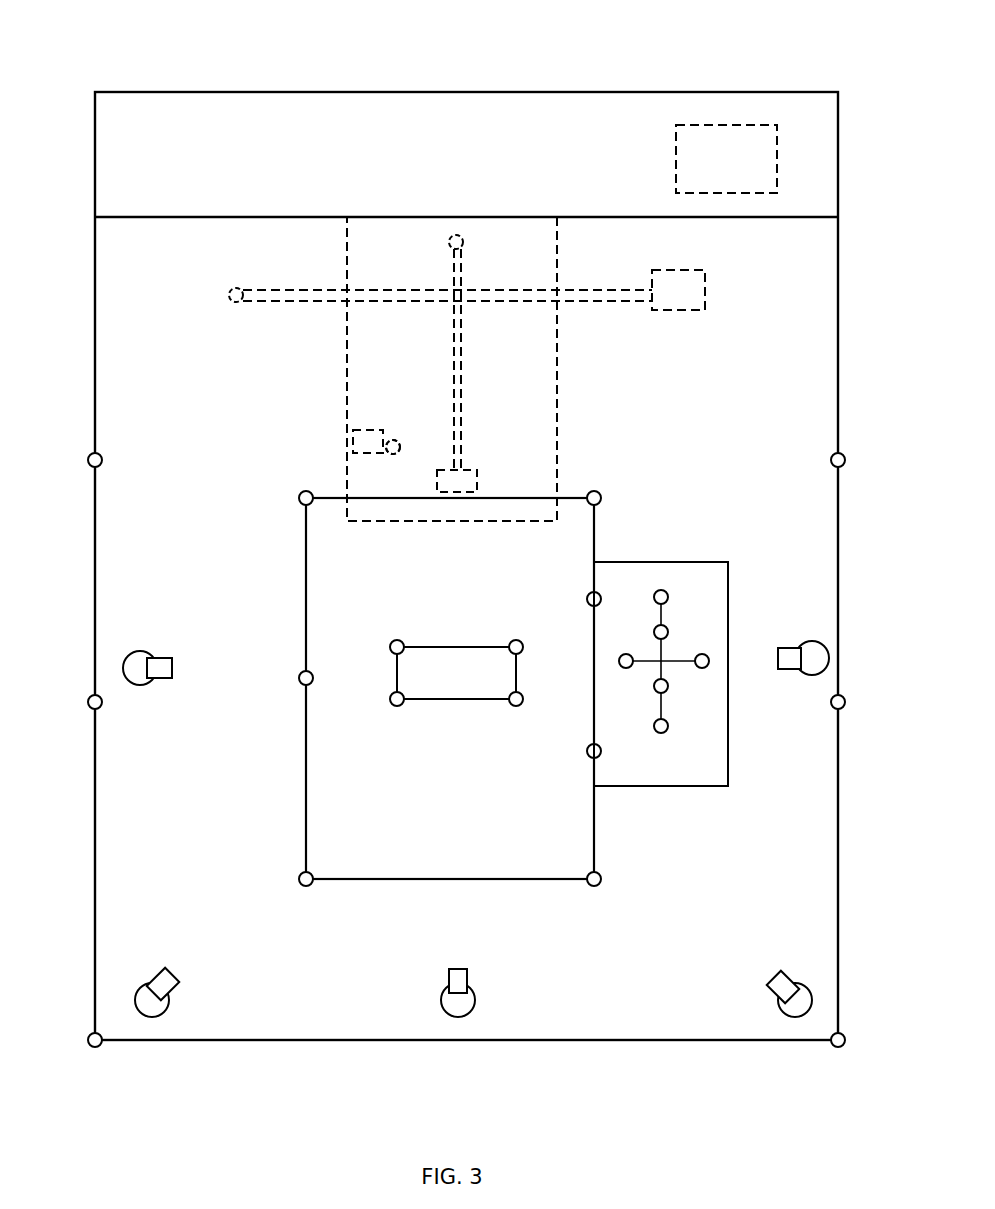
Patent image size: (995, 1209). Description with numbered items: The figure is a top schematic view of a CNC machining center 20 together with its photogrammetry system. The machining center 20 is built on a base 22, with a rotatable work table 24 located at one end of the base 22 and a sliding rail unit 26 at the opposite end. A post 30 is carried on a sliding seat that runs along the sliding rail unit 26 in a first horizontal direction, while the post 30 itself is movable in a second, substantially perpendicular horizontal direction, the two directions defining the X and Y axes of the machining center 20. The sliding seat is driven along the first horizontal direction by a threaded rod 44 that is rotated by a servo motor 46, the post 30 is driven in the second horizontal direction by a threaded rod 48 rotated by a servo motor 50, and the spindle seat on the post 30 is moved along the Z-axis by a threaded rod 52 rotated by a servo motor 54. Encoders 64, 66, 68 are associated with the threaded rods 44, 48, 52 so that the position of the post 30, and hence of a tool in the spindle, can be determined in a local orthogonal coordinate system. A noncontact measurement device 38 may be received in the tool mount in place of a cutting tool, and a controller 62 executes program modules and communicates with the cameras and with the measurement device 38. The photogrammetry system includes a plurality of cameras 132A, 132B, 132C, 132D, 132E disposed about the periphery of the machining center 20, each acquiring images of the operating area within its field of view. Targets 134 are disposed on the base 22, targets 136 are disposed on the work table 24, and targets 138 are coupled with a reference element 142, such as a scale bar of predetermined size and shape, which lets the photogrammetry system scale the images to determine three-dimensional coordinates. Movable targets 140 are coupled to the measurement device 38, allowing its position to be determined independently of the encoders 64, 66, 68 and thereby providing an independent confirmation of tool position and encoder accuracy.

The CNC machining center 20 is at (132, 42).
The base 22 is at (95, 878).
The work table 24 is at (450, 688).
The sliding rail unit 26 is at (286, 327).
The post 30 is at (542, 243).
The noncontact measurement device 38 is at (456, 673).
The threaded rod 44 is at (605, 305).
The servo motor 46 is at (670, 310).
The threaded rod 48 is at (464, 413).
The servo motor 50 is at (478, 483).
The threaded rod 52 is at (395, 440).
The servo motor 54 is at (358, 430).
The controller 62 is at (676, 160).
The encoder 64 is at (229, 288).
The encoder 66 is at (449, 240).
The encoder 68 is at (396, 456).
The camera 132A is at (125, 657).
The camera 132B is at (166, 1008).
The camera 132C is at (476, 1009).
The camera 132D is at (780, 1012).
The camera 132E is at (820, 639).
The targets 134 is at (90, 455).
The targets 136 is at (299, 495).
The targets 138 is at (690, 592).
The movable targets 140 is at (390, 645).
The reference element 142 is at (698, 706).